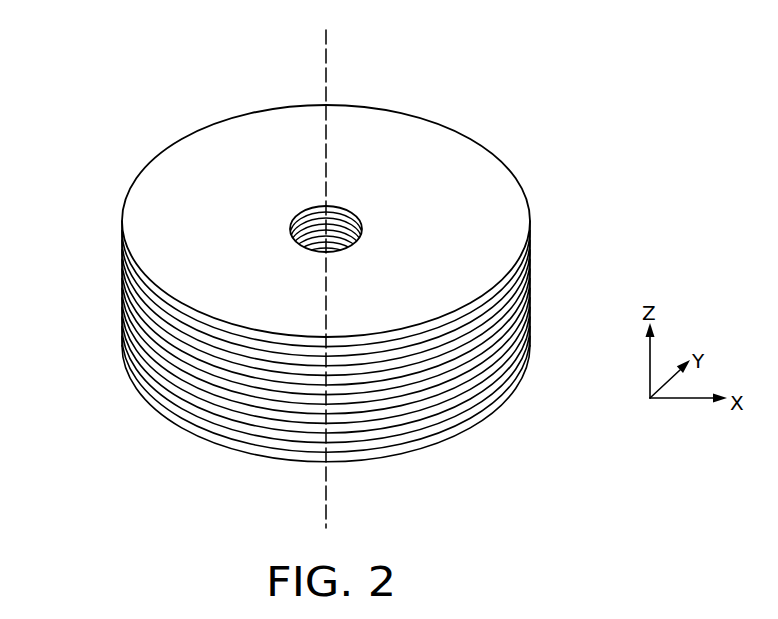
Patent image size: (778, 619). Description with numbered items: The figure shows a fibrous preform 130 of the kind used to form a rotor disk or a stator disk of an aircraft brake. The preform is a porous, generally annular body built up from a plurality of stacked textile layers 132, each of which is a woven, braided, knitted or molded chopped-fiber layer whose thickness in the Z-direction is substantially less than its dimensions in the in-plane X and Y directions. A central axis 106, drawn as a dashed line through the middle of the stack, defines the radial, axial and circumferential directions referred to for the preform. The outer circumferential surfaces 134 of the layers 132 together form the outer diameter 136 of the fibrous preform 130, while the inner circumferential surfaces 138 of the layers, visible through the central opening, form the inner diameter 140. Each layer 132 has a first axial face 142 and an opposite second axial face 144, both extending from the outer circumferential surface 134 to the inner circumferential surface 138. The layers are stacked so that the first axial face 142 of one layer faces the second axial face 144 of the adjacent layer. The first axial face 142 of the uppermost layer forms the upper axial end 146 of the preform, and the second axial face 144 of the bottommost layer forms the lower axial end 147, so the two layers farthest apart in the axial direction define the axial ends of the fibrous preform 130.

The central axis 106 is at (326, 45).
The fibrous preform 130 is at (560, 92).
The textile layer 132 is at (403, 117).
The outer circumferential surface 134 is at (188, 137).
The outer diameter 136 is at (528, 184).
The inner circumferential surface 138 is at (362, 228).
The inner diameter 140 is at (316, 228).
The first axial face 142 is at (237, 265).
The second axial face 144 is at (530, 288).
The upper axial end 146 is at (252, 112).
The lower axial end 147 is at (250, 462).